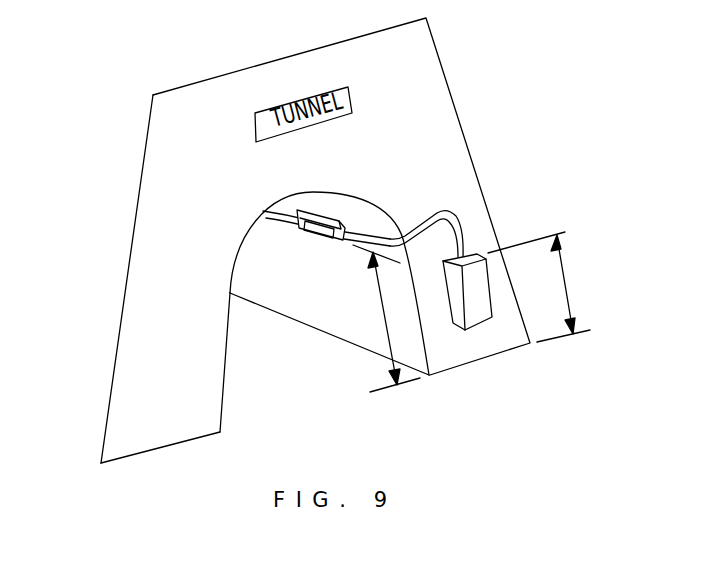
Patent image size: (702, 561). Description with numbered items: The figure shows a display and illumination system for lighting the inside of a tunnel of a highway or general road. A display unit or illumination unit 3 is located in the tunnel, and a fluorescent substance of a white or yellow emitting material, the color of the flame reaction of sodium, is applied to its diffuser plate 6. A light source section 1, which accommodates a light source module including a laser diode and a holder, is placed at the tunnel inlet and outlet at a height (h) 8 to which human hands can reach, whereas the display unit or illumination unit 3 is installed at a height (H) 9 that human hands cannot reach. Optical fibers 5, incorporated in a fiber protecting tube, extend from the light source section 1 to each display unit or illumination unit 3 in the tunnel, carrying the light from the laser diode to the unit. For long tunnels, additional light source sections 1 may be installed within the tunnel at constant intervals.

The light source section 1 is at (473, 278).
The display unit or illumination unit 3 is at (327, 213).
The optical fibers 5 is at (448, 210).
The diffuser plate 6 is at (302, 229).
The height (h) 8 is at (540, 287).
The height (H) 9 is at (386, 318).